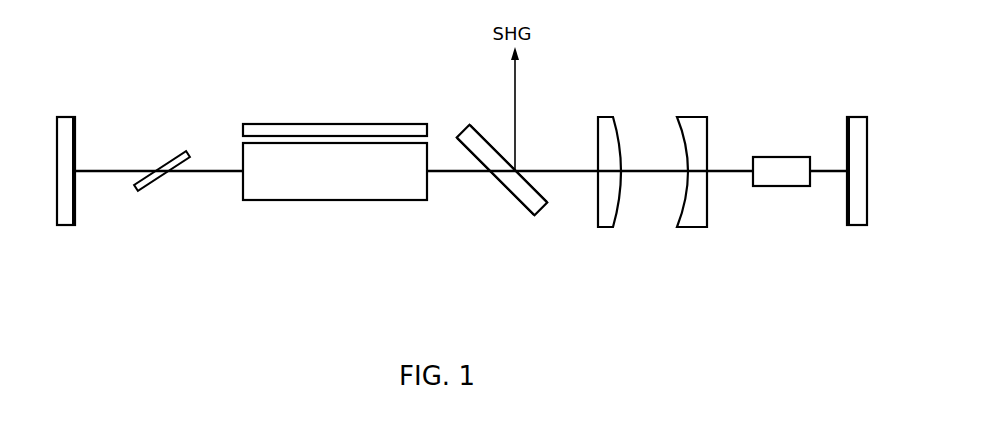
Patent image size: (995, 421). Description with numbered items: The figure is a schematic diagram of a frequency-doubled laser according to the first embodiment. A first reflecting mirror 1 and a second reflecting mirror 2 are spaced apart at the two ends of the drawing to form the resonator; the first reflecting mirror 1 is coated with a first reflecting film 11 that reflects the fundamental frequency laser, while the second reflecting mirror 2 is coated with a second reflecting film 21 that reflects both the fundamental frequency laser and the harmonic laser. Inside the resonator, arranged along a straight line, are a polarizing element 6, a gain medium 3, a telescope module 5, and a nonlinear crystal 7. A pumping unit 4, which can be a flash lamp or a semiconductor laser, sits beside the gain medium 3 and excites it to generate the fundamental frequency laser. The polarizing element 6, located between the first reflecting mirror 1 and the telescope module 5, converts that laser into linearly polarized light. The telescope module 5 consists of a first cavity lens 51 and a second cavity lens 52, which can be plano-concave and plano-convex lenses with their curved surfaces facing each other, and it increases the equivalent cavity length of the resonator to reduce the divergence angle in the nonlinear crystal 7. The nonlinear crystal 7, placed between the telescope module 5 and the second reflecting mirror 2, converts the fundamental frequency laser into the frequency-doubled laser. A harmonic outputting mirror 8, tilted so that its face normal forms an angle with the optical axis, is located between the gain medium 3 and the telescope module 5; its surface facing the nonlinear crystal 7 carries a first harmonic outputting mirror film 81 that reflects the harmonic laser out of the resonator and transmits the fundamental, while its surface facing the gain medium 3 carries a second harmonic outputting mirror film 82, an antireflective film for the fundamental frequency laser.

The first reflecting mirror 1 is at (63, 115).
The first reflecting film 11 is at (78, 205).
The polarizing element 6 is at (167, 157).
The pumping unit 4 is at (335, 123).
The gain medium 3 is at (340, 186).
The harmonic outputting mirror 8 is at (545, 208).
The first harmonic outputting mirror film 81 is at (483, 134).
The second harmonic outputting mirror film 82 is at (500, 186).
The telescope module 5 is at (651, 215).
The first cavity lens 51 is at (602, 228).
The second cavity lens 52 is at (692, 200).
The nonlinear crystal 7 is at (780, 172).
The second reflecting mirror 2 is at (855, 228).
The second reflecting film 21 is at (846, 128).